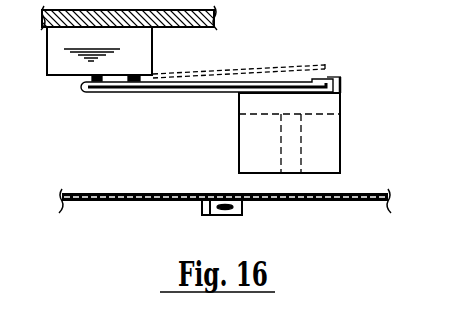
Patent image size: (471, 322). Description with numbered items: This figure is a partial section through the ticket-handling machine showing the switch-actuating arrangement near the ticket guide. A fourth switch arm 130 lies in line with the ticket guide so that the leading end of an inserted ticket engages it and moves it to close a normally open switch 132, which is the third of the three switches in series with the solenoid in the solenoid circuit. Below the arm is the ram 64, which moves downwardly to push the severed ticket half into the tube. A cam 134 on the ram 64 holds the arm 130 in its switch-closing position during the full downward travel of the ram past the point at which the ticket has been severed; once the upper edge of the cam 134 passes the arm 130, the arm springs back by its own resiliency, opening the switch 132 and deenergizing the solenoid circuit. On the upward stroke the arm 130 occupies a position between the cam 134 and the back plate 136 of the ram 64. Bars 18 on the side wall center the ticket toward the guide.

The bars 18 is at (210, 215).
The ram 64 is at (239, 148).
The fourth switch arm 130 is at (302, 72).
The normally open switch 132 is at (153, 48).
The cam 134 is at (341, 77).
The back plate 136 is at (258, 92).